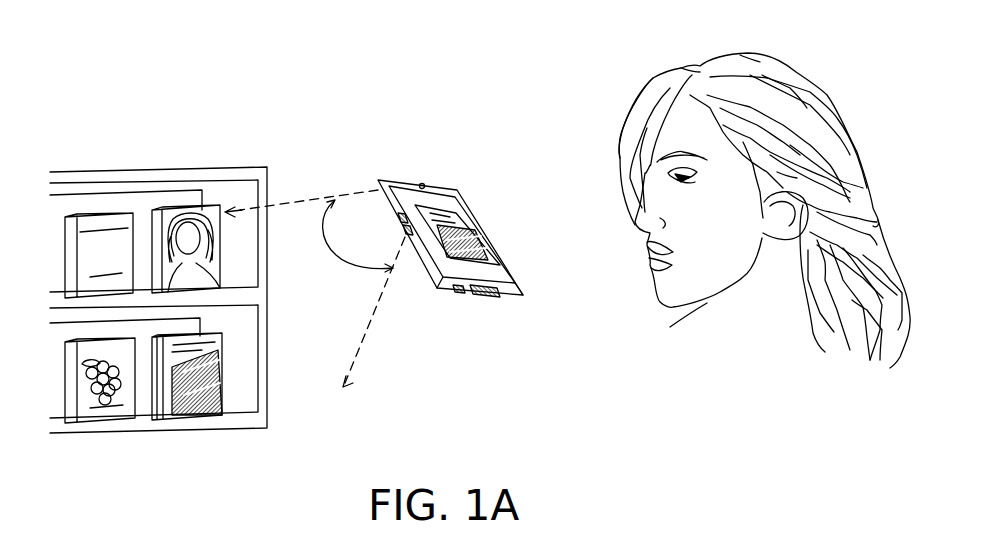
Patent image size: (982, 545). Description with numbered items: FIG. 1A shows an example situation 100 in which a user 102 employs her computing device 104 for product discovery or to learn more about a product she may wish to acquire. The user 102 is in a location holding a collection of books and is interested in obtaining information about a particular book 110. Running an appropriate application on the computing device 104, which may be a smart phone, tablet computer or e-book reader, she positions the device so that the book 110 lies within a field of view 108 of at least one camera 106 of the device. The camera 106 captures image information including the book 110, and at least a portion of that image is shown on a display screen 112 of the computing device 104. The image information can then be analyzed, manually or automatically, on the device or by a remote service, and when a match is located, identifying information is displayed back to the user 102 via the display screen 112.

The example situation 100 is at (93, 97).
The user 102 is at (607, 128).
The computing device 104 is at (453, 291).
The camera 106 is at (422, 186).
The field of view 108 is at (347, 239).
The book 110 is at (205, 418).
The display screen 112 is at (475, 232).